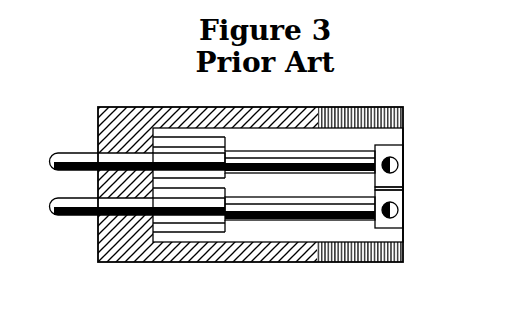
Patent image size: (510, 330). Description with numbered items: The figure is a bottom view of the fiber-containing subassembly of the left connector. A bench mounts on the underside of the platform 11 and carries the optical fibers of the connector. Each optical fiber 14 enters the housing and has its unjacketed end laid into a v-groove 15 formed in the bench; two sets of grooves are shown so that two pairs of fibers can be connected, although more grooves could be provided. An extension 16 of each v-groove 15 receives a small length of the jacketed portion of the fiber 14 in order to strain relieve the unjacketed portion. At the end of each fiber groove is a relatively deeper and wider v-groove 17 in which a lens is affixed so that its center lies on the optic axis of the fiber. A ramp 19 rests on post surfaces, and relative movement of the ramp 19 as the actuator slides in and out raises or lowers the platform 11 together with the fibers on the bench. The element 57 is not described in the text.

The platform 11 is at (217, 262).
The optical fiber 14 is at (62, 150).
The v-groove 15 is at (292, 142).
The extension 16 is at (224, 152).
The v-groove 17 is at (404, 148).
The ramp 19 is at (403, 110).
The contact separator 57 is at (403, 184).